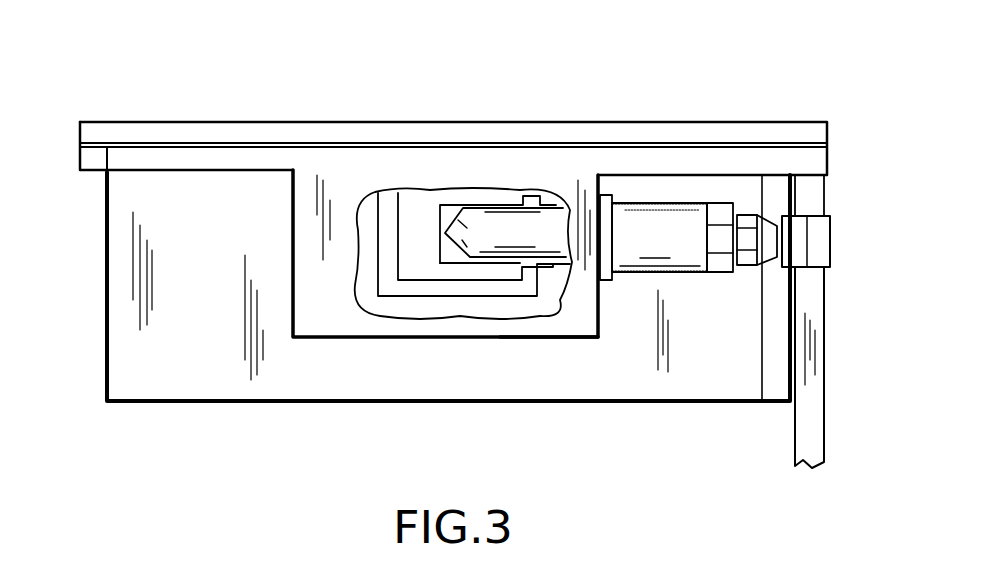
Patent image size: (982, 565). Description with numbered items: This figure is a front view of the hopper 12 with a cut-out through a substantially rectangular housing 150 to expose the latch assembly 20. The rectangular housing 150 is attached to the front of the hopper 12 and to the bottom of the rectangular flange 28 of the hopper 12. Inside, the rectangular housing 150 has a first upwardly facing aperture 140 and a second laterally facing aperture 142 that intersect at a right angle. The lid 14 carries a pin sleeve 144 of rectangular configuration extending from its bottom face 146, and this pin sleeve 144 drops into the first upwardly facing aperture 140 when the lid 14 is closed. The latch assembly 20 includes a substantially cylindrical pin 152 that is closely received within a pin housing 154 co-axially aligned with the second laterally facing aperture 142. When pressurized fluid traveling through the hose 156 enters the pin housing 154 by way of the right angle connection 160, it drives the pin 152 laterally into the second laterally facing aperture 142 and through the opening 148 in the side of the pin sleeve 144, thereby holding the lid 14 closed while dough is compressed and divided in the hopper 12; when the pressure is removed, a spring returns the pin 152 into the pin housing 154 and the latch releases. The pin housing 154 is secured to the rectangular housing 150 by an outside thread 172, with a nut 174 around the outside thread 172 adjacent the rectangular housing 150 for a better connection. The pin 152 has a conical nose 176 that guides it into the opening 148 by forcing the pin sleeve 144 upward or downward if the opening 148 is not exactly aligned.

The hopper 12 is at (106, 287).
The lid 14 is at (452, 122).
The latch assembly 20 is at (692, 246).
The rectangular flange 28 is at (147, 143).
The first upwardly facing aperture 140 is at (387, 268).
The second laterally facing aperture 142 is at (555, 266).
The pin sleeve 144 is at (415, 282).
The bottom face 146 is at (107, 147).
The opening 148 is at (448, 256).
The substantially rectangular housing 150 is at (548, 338).
The pin 152 is at (498, 226).
The pin housing 154 is at (680, 225).
The hose 156 is at (823, 370).
The right angle connection 160 is at (775, 210).
The outside thread 172 is at (673, 273).
The nut 174 is at (608, 155).
The conical nose 176 is at (457, 219).